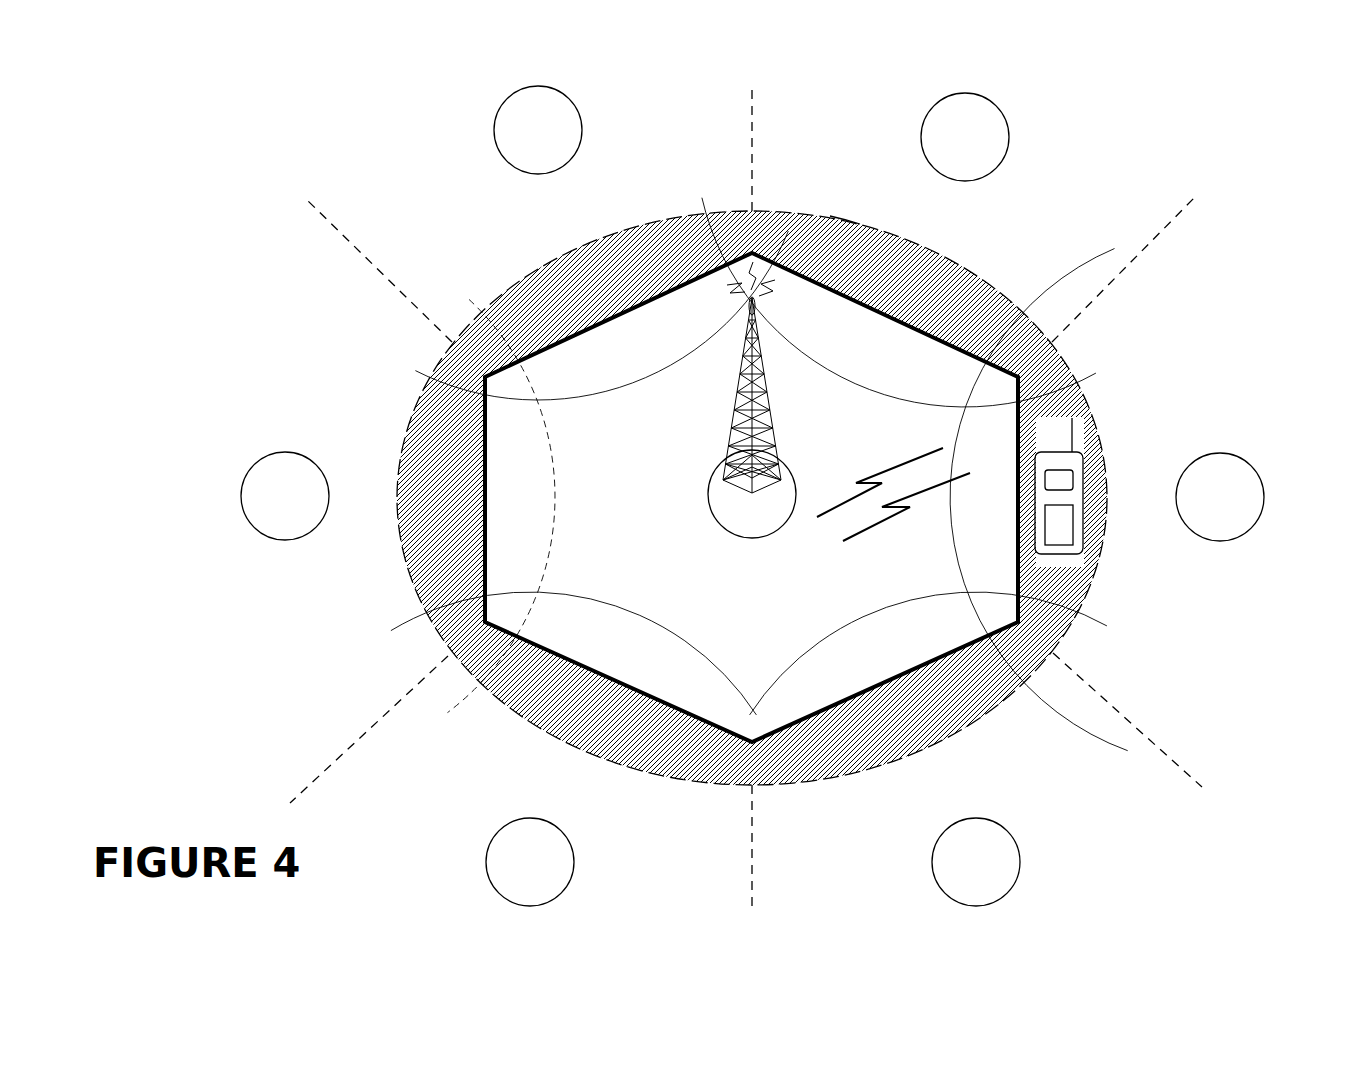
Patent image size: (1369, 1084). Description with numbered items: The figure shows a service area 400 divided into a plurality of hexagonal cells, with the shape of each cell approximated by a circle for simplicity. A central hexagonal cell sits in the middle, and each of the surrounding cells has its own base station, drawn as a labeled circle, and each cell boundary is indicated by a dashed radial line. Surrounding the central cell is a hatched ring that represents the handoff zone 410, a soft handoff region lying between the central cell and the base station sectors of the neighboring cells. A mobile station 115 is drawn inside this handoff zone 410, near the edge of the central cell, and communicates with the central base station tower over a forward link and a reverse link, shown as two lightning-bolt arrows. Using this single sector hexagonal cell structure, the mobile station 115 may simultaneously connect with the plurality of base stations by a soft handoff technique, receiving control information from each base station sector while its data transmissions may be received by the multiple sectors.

The service area 400 is at (1182, 161).
The handoff zone 410 is at (1077, 342).
The mobile station 115 is at (1085, 519).